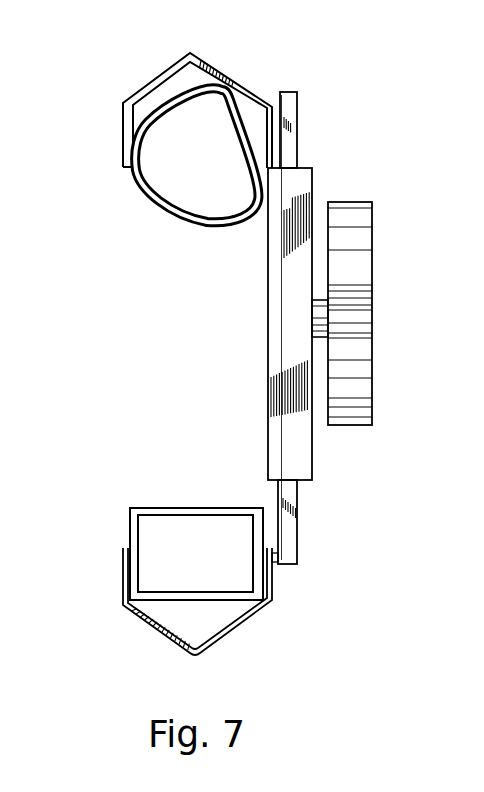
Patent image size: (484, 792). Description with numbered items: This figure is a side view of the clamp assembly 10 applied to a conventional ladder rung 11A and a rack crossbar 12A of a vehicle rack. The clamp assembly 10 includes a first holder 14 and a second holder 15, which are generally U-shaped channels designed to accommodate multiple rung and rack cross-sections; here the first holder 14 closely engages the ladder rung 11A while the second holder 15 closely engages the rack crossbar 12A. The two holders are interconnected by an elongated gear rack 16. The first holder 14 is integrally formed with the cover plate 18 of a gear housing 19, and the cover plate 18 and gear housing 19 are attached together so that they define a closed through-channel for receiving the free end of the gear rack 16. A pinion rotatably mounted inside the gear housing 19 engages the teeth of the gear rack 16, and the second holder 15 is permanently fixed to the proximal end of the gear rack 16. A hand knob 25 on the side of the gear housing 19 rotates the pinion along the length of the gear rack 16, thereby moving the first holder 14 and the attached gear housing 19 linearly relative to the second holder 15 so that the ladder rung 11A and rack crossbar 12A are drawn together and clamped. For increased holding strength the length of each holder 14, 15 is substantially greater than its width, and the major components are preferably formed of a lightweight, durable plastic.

The clamp assembly 10 is at (84, 226).
The first holder 14 is at (153, 83).
The ladder rung 11A is at (158, 213).
The gear rack 16 is at (293, 105).
The gear housing 19 is at (305, 180).
The cover plate 18 is at (267, 377).
The hand knob 25 is at (360, 270).
The rack crossbar 12A is at (195, 507).
The second holder 15 is at (238, 630).